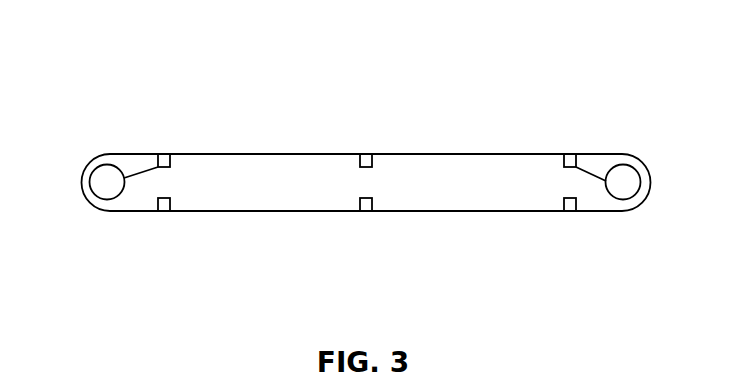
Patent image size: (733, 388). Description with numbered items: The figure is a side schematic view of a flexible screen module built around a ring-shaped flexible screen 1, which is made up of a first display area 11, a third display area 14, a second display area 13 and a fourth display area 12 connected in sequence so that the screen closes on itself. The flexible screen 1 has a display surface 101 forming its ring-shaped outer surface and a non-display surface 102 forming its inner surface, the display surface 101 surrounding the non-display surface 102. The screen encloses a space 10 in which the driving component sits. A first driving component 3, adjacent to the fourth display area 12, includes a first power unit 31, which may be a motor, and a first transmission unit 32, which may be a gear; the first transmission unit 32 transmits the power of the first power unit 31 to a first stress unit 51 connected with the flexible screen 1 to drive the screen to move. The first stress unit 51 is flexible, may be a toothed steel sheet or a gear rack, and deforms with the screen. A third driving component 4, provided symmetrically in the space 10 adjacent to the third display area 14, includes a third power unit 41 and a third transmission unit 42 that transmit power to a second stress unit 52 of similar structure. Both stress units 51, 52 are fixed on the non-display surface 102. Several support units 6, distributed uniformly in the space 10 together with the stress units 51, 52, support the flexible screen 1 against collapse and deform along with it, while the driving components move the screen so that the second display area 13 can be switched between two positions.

The flexible screen 1 is at (640, 161).
The first driving component 3 is at (148, 62).
The third driving component 4 is at (637, 66).
The support unit 6 is at (365, 156).
The space 10 is at (228, 187).
The first display area 11 is at (281, 154).
The fourth display area 12 is at (81, 182).
The second display area 13 is at (288, 211).
The third display area 14 is at (651, 182).
The first power unit 31 is at (103, 154).
The first transmission unit 32 is at (131, 154).
The third power unit 41 is at (622, 154).
The third transmission unit 42 is at (592, 154).
The first stress unit 51 is at (165, 154).
The second stress unit 52 is at (565, 154).
The display surface 101 is at (489, 211).
The non-display surface 102 is at (456, 211).